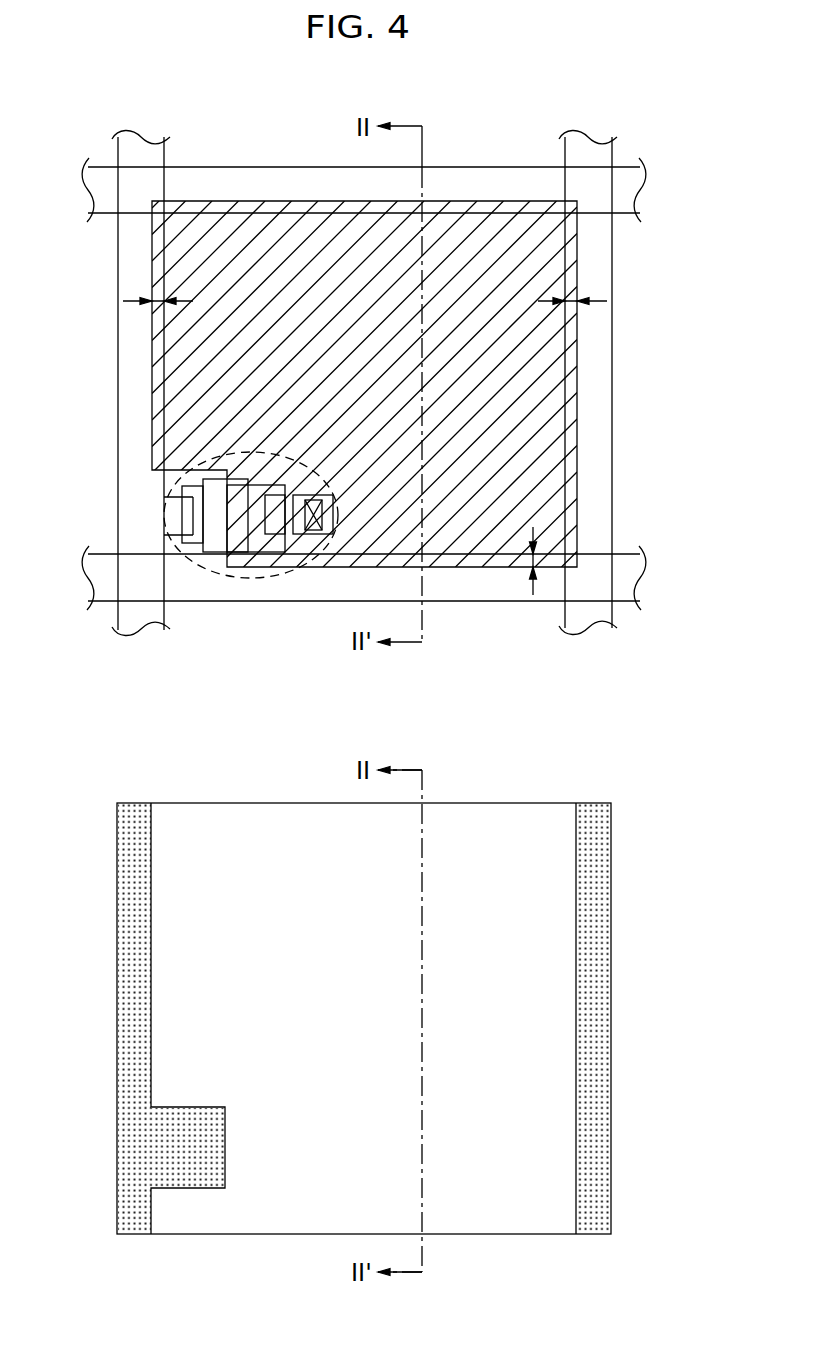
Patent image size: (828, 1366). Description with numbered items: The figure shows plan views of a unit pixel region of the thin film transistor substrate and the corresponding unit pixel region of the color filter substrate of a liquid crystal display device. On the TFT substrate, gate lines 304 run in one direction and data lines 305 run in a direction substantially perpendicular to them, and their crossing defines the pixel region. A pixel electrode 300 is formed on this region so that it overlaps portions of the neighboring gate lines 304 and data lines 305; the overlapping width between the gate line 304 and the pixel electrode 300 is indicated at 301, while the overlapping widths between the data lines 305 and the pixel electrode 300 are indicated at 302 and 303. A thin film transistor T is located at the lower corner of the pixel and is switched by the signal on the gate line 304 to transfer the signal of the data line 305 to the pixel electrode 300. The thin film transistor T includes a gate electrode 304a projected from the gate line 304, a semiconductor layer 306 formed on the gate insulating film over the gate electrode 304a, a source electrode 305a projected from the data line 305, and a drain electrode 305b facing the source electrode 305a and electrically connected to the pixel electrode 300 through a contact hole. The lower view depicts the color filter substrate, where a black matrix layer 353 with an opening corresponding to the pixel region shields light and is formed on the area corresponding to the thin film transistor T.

The pixel electrode 300 is at (540, 373).
The overlapping width between gate line and pixel electrode 301 is at (530, 560).
The overlapping width between data line and pixel electrode 302 is at (155, 300).
The overlapping width between data line and pixel electrode 303 is at (578, 300).
The gate line 304 is at (438, 588).
The gate electrode 304a is at (217, 552).
The data line 305 is at (125, 357).
The source electrode 305a is at (172, 513).
The drain electrode 305b is at (290, 525).
The semiconductor layer 306 is at (260, 537).
The thin film transistor T is at (200, 462).
The black matrix layer 353 is at (122, 942).